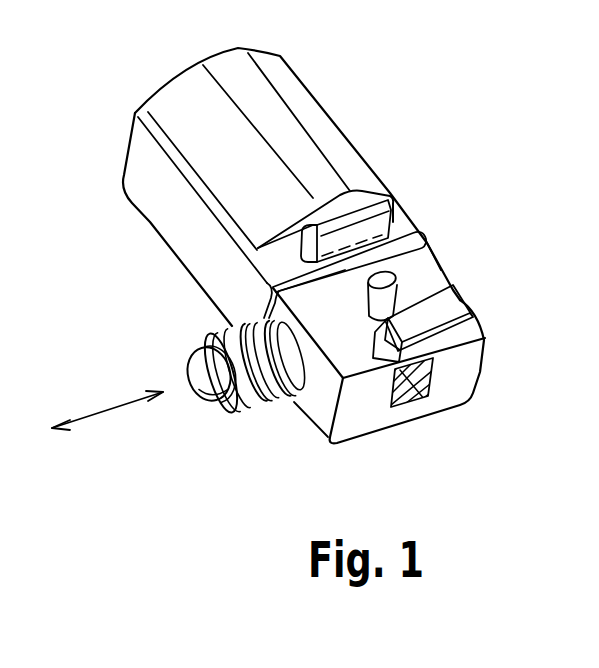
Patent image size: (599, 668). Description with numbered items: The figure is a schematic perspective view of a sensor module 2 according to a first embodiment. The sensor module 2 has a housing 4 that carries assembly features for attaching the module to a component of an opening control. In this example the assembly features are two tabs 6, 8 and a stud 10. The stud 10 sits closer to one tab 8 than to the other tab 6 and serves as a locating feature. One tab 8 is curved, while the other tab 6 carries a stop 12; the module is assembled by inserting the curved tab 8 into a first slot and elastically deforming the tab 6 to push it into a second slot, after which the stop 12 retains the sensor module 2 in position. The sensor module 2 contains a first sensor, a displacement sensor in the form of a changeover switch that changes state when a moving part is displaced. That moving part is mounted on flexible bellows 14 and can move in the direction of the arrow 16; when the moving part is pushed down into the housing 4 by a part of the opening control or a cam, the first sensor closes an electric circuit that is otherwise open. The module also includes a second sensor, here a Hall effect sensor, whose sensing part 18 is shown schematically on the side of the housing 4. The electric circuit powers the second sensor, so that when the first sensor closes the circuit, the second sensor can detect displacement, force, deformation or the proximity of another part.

The sensor module 2 is at (108, 128).
The housing 4 is at (177, 96).
The tab 6 is at (391, 193).
The tab 8 is at (462, 307).
The stud 10 is at (398, 297).
The stop 12 is at (418, 233).
The flexible bellows 14 is at (265, 415).
The arrow 16 is at (110, 410).
The sensing part 18 is at (427, 400).